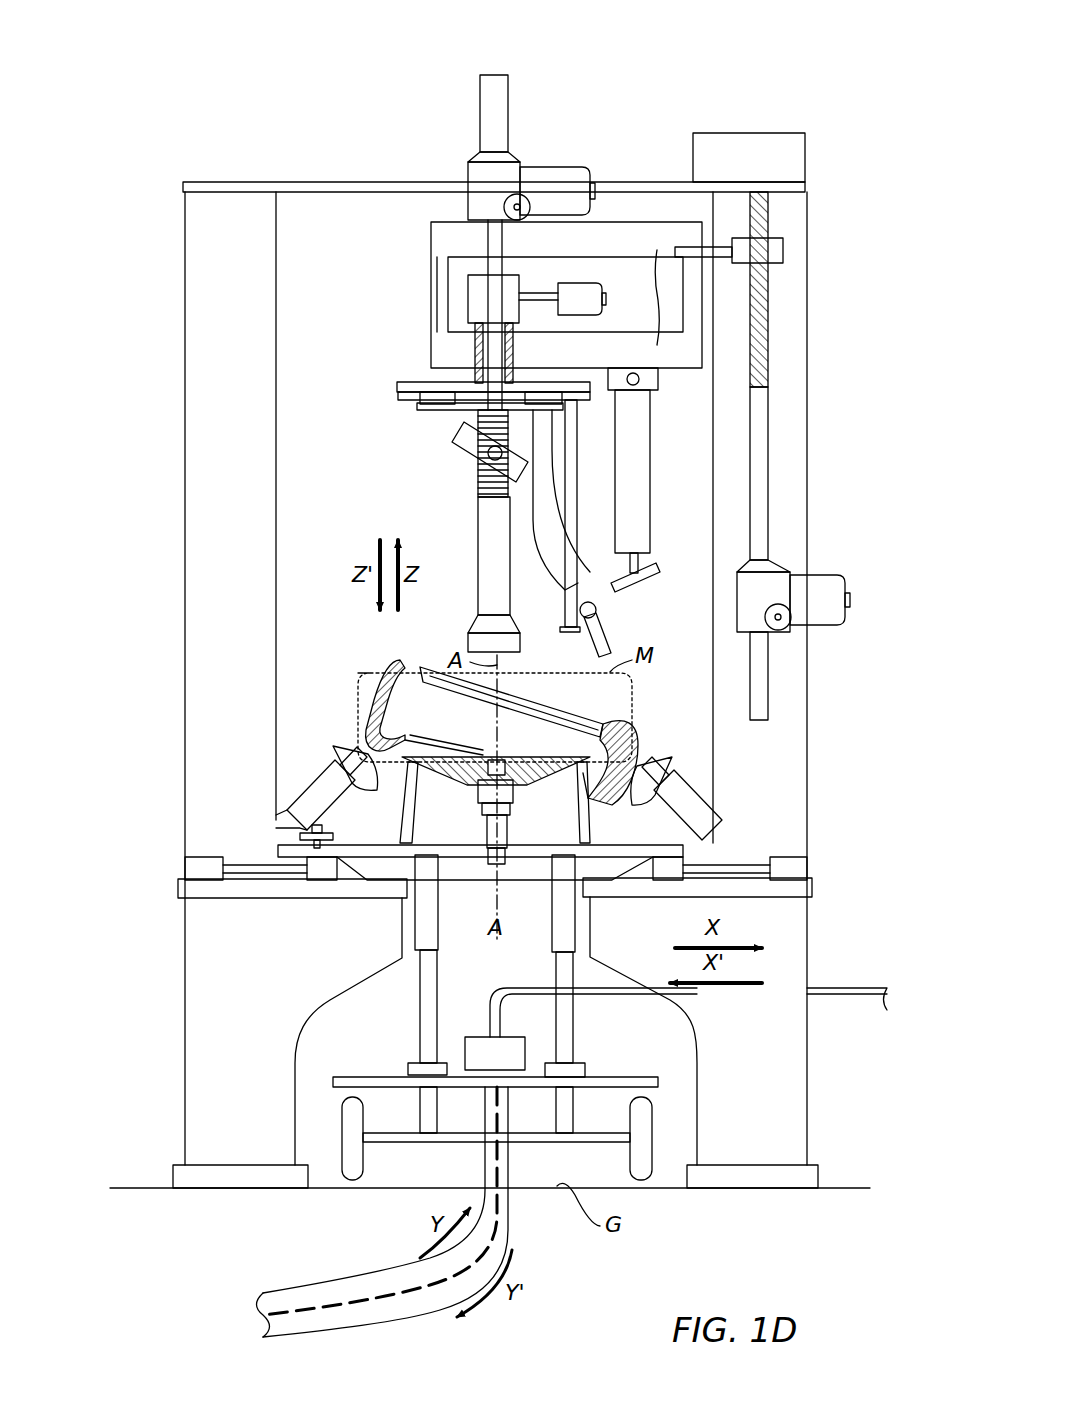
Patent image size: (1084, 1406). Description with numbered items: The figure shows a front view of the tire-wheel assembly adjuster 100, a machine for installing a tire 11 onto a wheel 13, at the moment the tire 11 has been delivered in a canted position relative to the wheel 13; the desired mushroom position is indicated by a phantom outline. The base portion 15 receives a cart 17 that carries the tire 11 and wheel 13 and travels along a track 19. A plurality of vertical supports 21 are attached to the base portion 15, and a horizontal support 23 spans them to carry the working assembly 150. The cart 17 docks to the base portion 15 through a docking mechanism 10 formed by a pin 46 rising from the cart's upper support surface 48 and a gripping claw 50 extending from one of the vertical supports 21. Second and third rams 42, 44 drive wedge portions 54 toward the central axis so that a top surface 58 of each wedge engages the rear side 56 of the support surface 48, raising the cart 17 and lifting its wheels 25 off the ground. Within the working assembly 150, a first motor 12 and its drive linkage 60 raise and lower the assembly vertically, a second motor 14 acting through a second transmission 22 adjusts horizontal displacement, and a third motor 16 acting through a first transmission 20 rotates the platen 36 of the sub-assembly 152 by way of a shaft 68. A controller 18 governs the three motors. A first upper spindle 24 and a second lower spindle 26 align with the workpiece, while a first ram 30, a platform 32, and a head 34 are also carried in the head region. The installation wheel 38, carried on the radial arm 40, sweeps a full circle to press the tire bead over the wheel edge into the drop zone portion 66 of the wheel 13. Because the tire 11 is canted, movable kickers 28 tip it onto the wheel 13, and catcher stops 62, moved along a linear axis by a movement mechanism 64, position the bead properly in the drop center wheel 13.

The tire-wheel assembly adjuster 100 is at (160, 68).
The docking mechanism 10 is at (325, 850).
The tire 11 is at (405, 665).
The first motor 12 is at (820, 578).
The wheel 13 is at (557, 768).
The second motor 14 is at (552, 170).
The base portion 15 is at (190, 1012).
The third motor 16 is at (588, 290).
The cart 17 is at (407, 1015).
The controller 18 is at (795, 155).
The track 19 is at (333, 1283).
The first transmission 20 is at (518, 285).
The vertical supports 21 is at (185, 583).
The second transmission 22 is at (475, 172).
The horizontal support 23 is at (298, 182).
The first upper spindle 24 is at (488, 540).
The wheels 25 is at (350, 1125).
The second lower spindle 26 is at (502, 862).
The kickers 28 is at (322, 770).
The first ram 30 is at (640, 440).
The platform 32 is at (654, 297).
The head 34 is at (670, 565).
The platen 36 is at (388, 388).
The installation wheel 38 is at (616, 640).
The radial arm 40 is at (545, 545).
The second ram 42 is at (243, 858).
The third ram 44 is at (752, 858).
The pin 46 is at (322, 833).
The upper support surface 48 is at (465, 858).
The gripping claw 50 is at (318, 850).
The wedge portions 54 is at (320, 858).
The rear side 56 is at (443, 860).
The top surface 58 is at (300, 822).
The drive linkage 60 is at (780, 327).
The catcher stops 62 is at (658, 750).
The movement mechanism 64 is at (690, 775).
The drop zone portion 66 is at (598, 795).
The shaft 68 is at (513, 350).
The working assembly 150 is at (360, 268).
The sub-assembly 152 is at (470, 353).